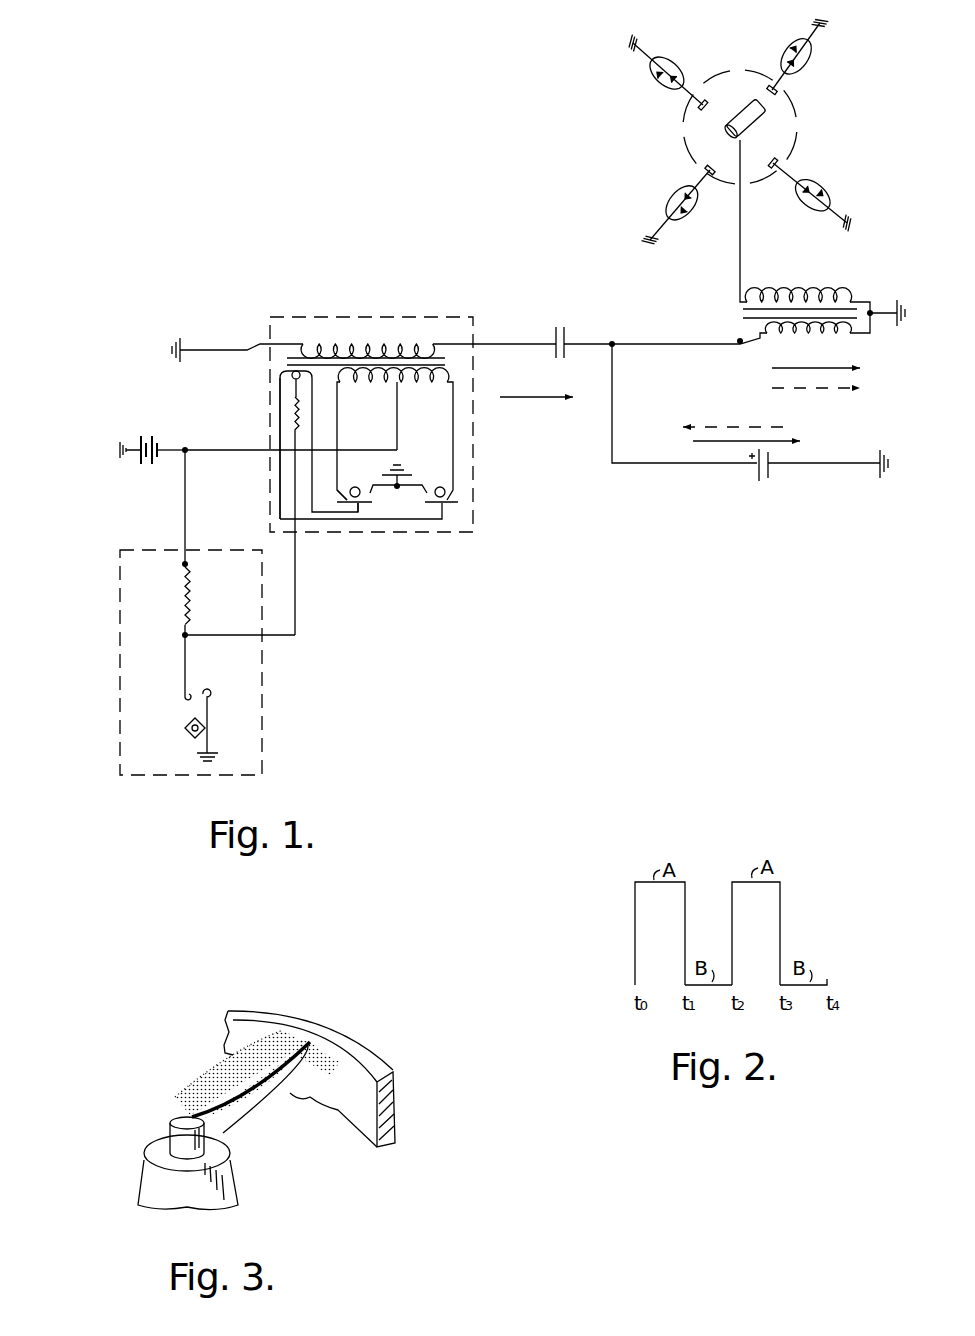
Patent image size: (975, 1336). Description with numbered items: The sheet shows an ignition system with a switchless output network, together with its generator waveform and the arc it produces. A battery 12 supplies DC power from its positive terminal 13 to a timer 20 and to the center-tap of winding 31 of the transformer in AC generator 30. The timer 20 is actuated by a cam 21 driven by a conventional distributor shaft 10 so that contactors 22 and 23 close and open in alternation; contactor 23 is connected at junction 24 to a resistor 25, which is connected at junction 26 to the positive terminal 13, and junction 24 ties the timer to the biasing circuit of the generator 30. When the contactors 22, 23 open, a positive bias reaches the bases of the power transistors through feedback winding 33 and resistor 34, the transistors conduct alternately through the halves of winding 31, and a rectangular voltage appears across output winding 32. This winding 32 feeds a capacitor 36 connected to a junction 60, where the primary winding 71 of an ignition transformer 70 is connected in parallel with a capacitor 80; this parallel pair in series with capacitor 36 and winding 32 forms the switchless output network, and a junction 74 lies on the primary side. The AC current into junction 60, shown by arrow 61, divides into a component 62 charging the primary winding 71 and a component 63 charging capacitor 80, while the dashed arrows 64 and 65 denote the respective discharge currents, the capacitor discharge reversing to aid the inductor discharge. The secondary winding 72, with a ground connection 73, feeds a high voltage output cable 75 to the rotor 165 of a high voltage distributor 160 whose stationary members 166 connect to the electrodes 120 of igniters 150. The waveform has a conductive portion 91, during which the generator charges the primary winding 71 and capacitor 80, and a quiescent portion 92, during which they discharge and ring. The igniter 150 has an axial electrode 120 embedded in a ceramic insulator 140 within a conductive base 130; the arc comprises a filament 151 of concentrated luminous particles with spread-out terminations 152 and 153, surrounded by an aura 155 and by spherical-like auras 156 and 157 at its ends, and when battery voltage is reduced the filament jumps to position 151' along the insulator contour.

In FIG. 1, the distributor shaft 10 is at (186, 734).
In FIG. 1, the battery 12 is at (146, 447).
In FIG. 1, the positive terminal 13 is at (188, 452).
In FIG. 1, the timer 20 is at (242, 612).
In FIG. 1, the cam 21 is at (190, 724).
In FIG. 1, the contactor 22 is at (210, 720).
In FIG. 1, the contactor 23 is at (184, 670).
In FIG. 1, the junction 24 is at (183, 635).
In FIG. 1, the resistor 25 is at (192, 592).
In FIG. 1, the junction 26 is at (182, 564).
In FIG. 1, the AC generator 30 is at (358, 476).
In FIG. 1, the winding 31 is at (357, 383).
In FIG. 1, the output winding 32 is at (355, 344).
In FIG. 1, the feedback winding 33 is at (276, 373).
In FIG. 1, the resistor 34 is at (290, 414).
In FIG. 1, the capacitor 36 is at (562, 327).
In FIG. 1, the junction 60 is at (614, 347).
In FIG. 1, the arrow 61 is at (520, 398).
In FIG. 1, the current component 62 is at (860, 368).
In FIG. 1, the current component 63 is at (805, 441).
In FIG. 1, the dashed arrow 64 is at (860, 389).
In FIG. 1, the dashed arrow 65 is at (683, 427).
In FIG. 1, the ignition transformer 70 is at (822, 249).
In FIG. 1, the primary winding 71 is at (800, 337).
In FIG. 1, the secondary winding 72 is at (790, 296).
In FIG. 1, the ground connection 73 is at (872, 318).
In FIG. 1, the junction 74 is at (742, 344).
In FIG. 1, the high voltage output cable 75 is at (742, 278).
In FIG. 1, the capacitor 80 is at (772, 474).
In FIG. 2, the conductive portion 91 is at (647, 937).
In FIG. 2, the quiescent portion 92 is at (698, 937).
In FIG. 1, the axial electrode 120 is at (676, 91).
In FIG. 3, the axial electrode 120 is at (148, 1135).
In FIG. 1, the igniter base 130 is at (652, 79).
In FIG. 3, the igniter base 130 is at (309, 1079).
In FIG. 3, the ceramic insulator 140 is at (152, 1192).
In FIG. 1, the igniter 150 is at (744, 132).
In FIG. 3, the igniter 150 is at (241, 1104).
In FIG. 3, the arc filament 151 is at (240, 1070).
In FIG. 3, the arc filament position 151' is at (265, 1094).
In FIG. 3, the spread-out termination 152 is at (172, 1124).
In FIG. 3, the spread-out termination 153 is at (318, 1040).
In FIG. 3, the aura of luminous particles 155 is at (273, 1077).
In FIG. 3, the spherical-like aura 156 is at (173, 1091).
In FIG. 3, the spherical-like aura 157 is at (304, 1076).
In FIG. 1, the high voltage distributor 160 is at (744, 132).
In FIG. 1, the rotor 165 is at (756, 122).
In FIG. 1, the stationary members 166 is at (766, 90).